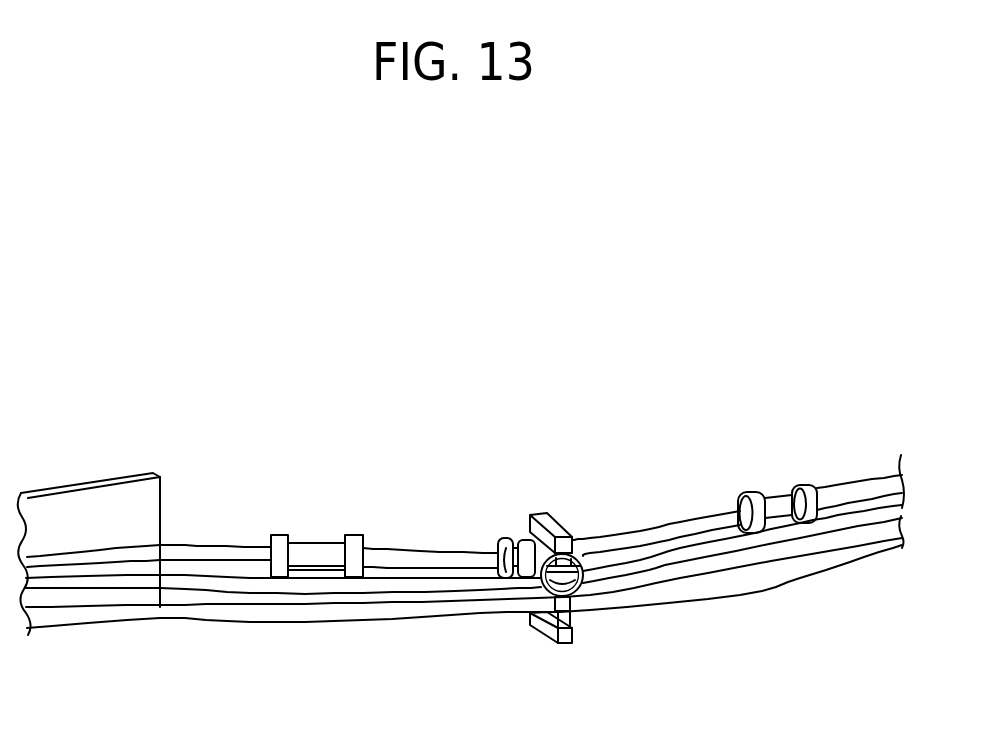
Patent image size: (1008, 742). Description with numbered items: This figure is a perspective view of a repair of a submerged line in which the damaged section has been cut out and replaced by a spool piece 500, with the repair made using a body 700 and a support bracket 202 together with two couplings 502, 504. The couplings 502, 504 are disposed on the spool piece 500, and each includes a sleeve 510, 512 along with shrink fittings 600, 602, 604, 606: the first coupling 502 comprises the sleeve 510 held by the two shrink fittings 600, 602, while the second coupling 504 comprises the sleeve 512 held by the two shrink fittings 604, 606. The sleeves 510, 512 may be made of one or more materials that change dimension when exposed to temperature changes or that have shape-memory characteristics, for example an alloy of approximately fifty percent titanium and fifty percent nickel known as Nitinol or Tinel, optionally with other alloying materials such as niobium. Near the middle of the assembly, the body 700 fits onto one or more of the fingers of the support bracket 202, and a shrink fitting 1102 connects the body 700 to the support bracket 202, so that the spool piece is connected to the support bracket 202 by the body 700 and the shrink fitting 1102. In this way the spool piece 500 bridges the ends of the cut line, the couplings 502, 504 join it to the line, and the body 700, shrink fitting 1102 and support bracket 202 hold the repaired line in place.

The support bracket 202 is at (565, 645).
The spool piece 500 is at (633, 530).
The coupling 502 is at (320, 505).
The coupling 504 is at (737, 481).
The sleeve 510 is at (310, 542).
The sleeve 512 is at (770, 498).
The shrink fitting 600 is at (283, 535).
The shrink fitting 602 is at (350, 535).
The shrink fitting 604 is at (742, 498).
The shrink fitting 606 is at (810, 484).
The body 700 is at (528, 538).
The shrink fitting 1102 is at (583, 589).